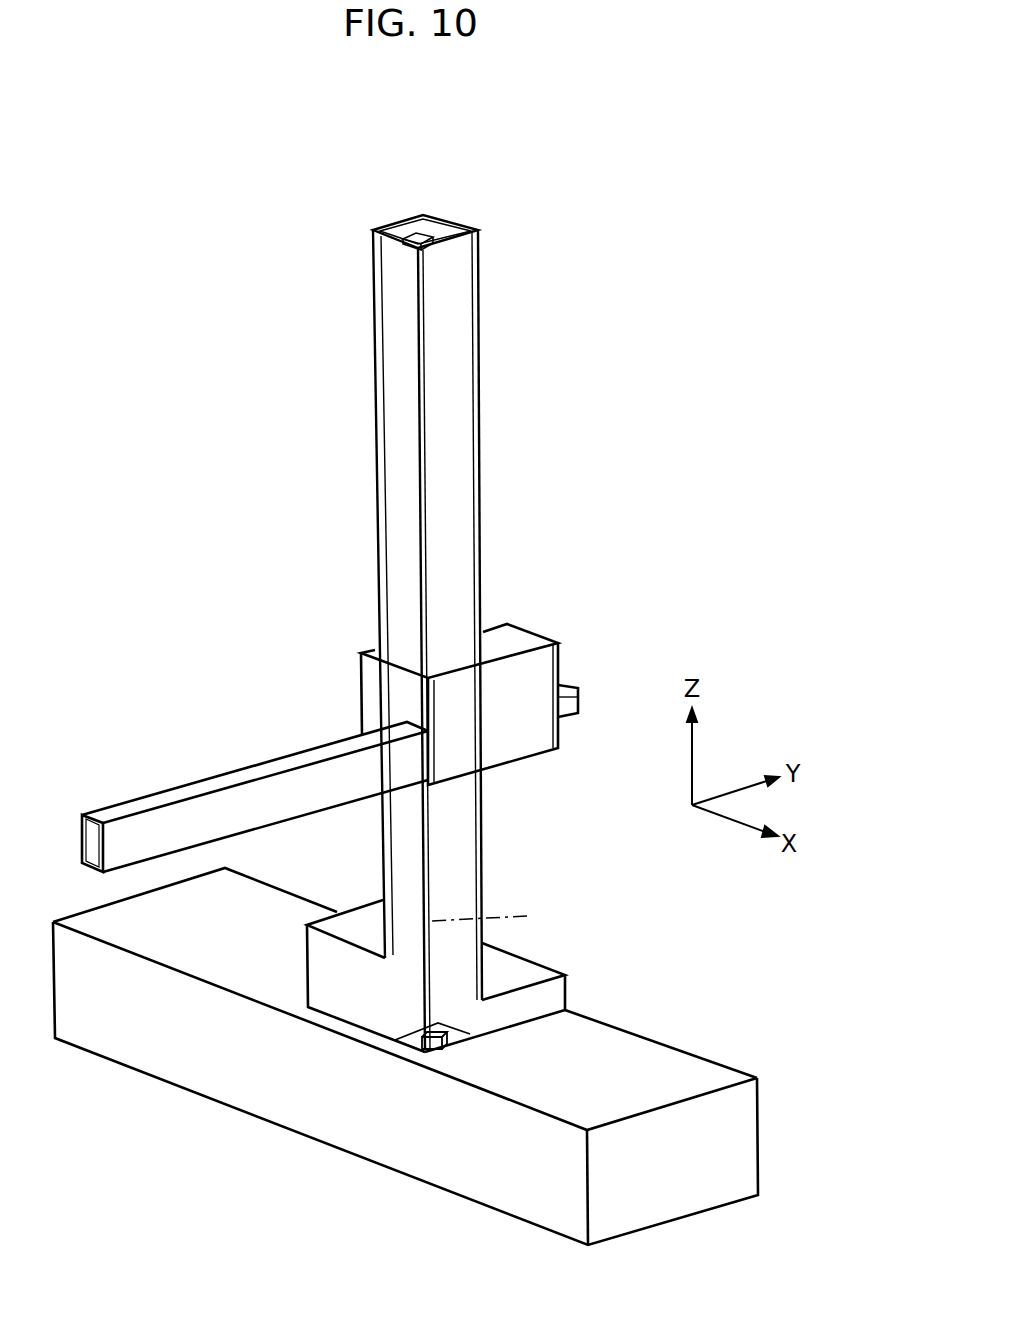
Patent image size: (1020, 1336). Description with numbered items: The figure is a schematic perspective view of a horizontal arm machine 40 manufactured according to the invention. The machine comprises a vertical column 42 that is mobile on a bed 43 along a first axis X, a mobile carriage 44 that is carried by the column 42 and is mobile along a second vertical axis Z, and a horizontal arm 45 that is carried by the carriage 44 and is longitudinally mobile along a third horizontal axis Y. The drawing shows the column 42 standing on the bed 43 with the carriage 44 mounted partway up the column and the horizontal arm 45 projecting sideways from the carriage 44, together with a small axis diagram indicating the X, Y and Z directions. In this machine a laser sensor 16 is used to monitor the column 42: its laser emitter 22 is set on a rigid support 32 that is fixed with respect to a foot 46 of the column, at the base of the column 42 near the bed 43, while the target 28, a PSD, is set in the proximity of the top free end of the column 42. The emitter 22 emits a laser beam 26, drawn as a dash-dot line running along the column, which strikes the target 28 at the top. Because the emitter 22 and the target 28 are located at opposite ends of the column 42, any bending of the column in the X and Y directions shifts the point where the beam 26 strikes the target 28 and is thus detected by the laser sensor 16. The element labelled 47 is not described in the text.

The laser sensor 16 is at (411, 1036).
The laser emitter 22 is at (437, 1048).
The laser beam 26 is at (527, 916).
The target 28 is at (410, 228).
The rigid support 32 is at (452, 1036).
The horizontal arm machine 40 is at (566, 433).
The vertical column 42 is at (446, 594).
The bed 43 is at (666, 1057).
The mobile carriage 44 is at (540, 666).
The horizontal arm 45 is at (220, 797).
The foot 46 is at (528, 968).
The scale 47 is at (450, 252).